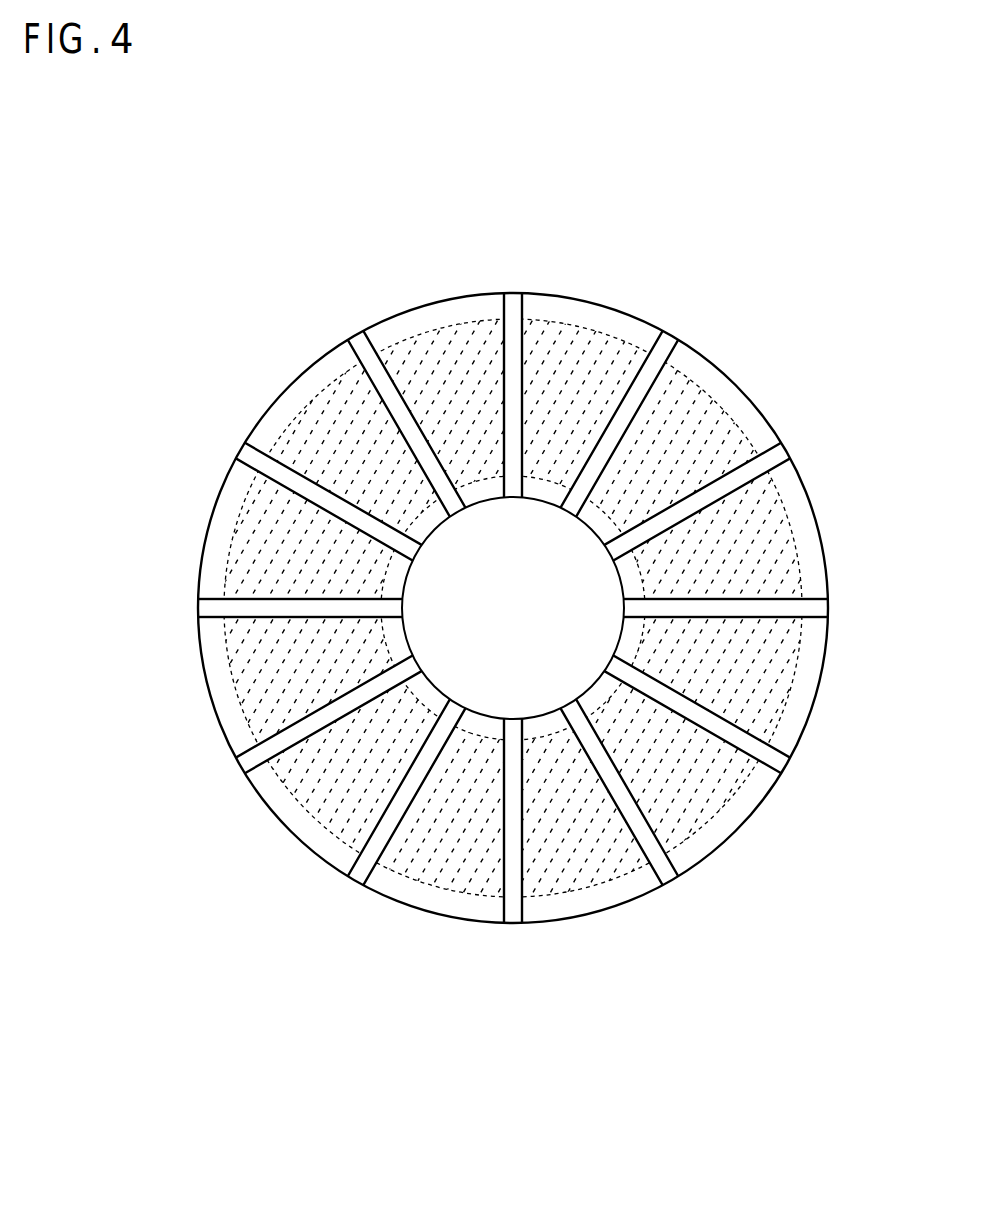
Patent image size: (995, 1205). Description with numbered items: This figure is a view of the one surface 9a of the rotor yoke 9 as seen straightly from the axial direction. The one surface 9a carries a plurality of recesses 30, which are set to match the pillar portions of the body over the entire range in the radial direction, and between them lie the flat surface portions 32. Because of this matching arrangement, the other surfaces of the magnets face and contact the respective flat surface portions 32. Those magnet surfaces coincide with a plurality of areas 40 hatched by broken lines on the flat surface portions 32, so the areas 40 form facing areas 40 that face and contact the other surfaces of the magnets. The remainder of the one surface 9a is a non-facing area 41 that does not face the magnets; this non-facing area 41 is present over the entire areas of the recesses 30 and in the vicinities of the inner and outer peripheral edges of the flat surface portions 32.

The rotor yoke 9 is at (497, 610).
The one surface of the rotor yoke 9a is at (712, 794).
The recesses 30 is at (272, 477).
The flat surface portions 32 is at (551, 350).
The facing areas 40 is at (800, 502).
The non-facing area 41 is at (408, 895).